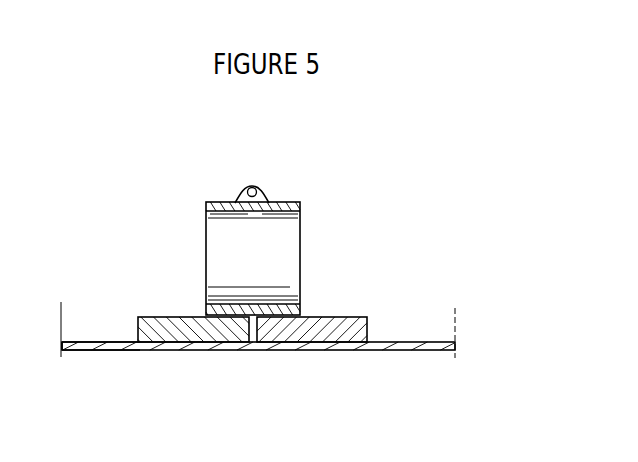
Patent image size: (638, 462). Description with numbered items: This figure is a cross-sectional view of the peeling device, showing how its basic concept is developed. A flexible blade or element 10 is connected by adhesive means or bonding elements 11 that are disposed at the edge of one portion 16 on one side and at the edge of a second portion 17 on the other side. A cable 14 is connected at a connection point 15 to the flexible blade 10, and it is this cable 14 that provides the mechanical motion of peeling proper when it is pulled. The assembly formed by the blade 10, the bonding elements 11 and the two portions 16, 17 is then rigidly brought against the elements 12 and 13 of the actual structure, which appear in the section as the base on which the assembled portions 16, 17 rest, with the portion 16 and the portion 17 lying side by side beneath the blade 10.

The flexible blade 10 is at (301, 212).
The bonding elements 11 is at (300, 311).
The element of the actual structure 12 is at (416, 343).
The element of the actual structure 13 is at (112, 342).
The cable 14 is at (259, 189).
The connection point 15 is at (248, 186).
The portion 16 is at (380, 341).
The portion 17 is at (158, 323).